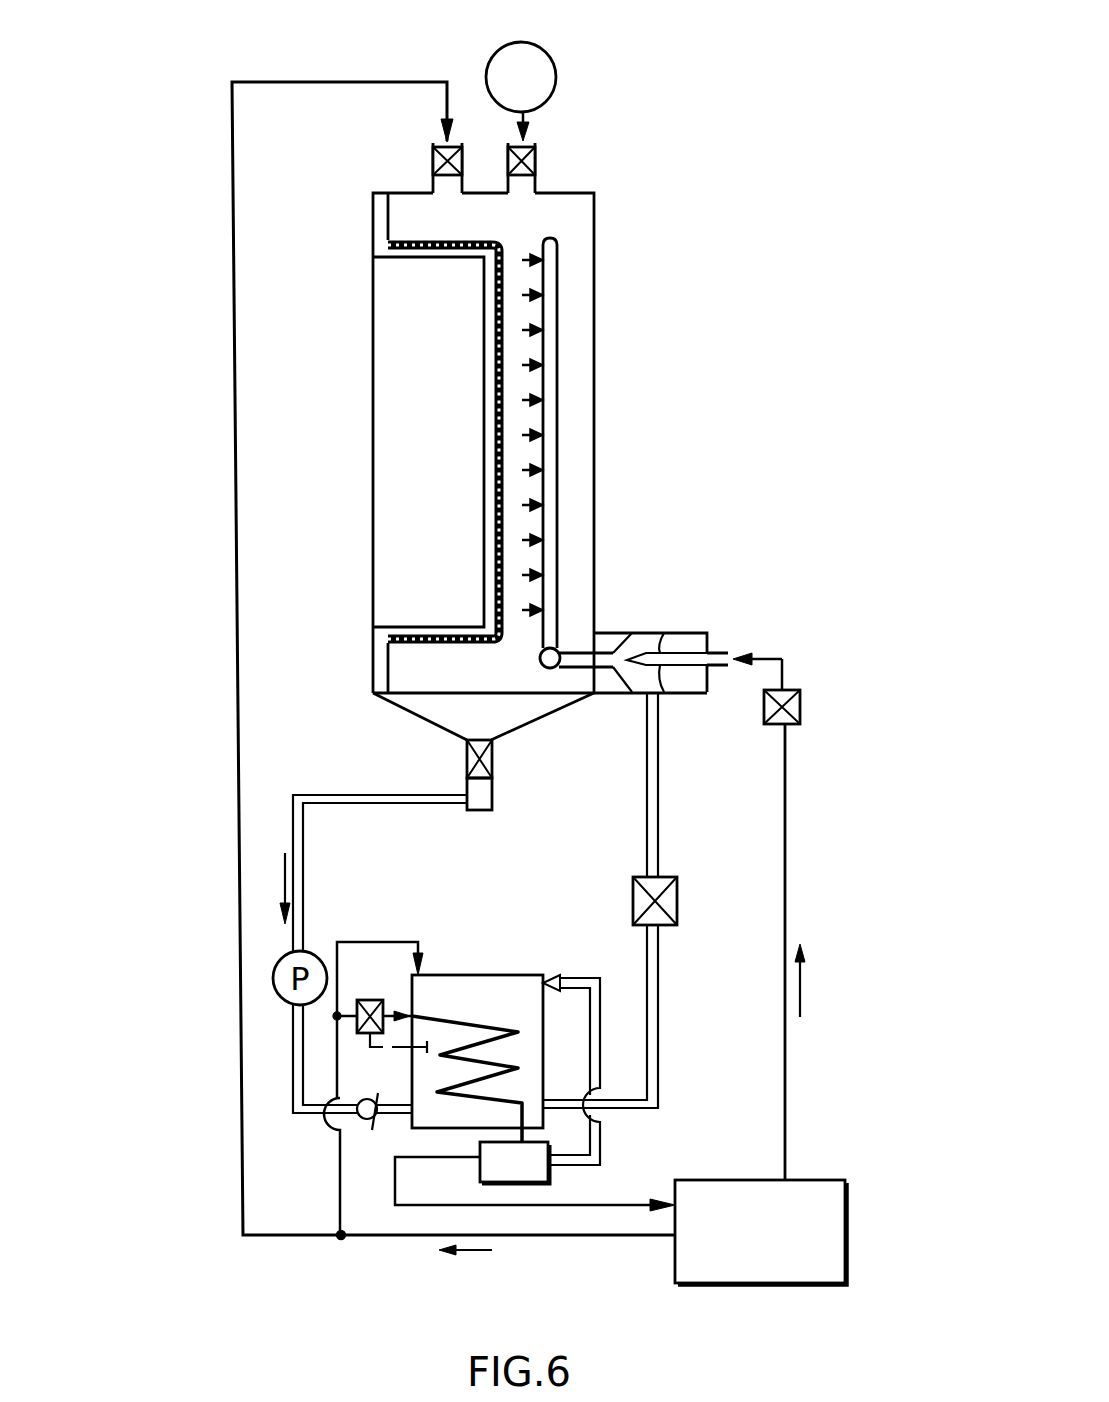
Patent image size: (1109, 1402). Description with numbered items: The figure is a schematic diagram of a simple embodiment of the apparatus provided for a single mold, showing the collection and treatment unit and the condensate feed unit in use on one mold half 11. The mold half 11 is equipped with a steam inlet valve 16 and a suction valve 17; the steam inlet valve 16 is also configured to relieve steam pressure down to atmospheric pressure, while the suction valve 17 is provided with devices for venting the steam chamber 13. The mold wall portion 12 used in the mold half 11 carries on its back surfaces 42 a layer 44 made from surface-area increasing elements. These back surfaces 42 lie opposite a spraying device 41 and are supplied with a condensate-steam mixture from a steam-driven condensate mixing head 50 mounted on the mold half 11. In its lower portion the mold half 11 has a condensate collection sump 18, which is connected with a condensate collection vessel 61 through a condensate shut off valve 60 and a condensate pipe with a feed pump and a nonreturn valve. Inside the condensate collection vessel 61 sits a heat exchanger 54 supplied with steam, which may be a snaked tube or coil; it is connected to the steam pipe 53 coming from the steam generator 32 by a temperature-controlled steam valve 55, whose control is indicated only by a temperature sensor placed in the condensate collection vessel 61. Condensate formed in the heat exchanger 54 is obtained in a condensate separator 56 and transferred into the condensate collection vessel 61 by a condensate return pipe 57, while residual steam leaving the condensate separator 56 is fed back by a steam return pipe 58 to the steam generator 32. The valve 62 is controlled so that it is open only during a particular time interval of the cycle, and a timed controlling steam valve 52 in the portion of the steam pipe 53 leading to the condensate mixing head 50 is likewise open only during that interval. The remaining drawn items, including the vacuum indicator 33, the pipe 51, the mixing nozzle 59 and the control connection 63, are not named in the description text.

The mold half 11 is at (712, 262).
The mold wall portion 12 is at (497, 384).
The steam chamber 13 is at (572, 472).
The steam inlet valve 16 is at (432, 161).
The suction valve 17 is at (536, 162).
The condensate collection sump 18 is at (470, 710).
The steam generator 32 is at (815, 1200).
The vacuum pump 33 is at (553, 76).
The spraying device 41 is at (549, 388).
The back surfaces 42 is at (512, 570).
The layer made from surface-area increasing elements 44 is at (505, 287).
The condensate mixing head 50 is at (748, 562).
The suction pipe 51 is at (650, 818).
The timed controlling steam valve 52 is at (803, 707).
The steam pipe 53 is at (237, 690).
The heat exchanger 54 is at (500, 1025).
The temperature-controlled steam valve 55 is at (372, 1000).
The condensate separator 56 is at (500, 1163).
The condensate return pipe 57 is at (601, 1052).
The steam return pipe 58 is at (622, 1203).
The steam ejector 59 is at (687, 634).
The condensate shut off valve 60 is at (493, 760).
The condensate collection vessel 61 is at (459, 987).
The valve 62 is at (678, 902).
The control unit 63 is at (388, 942).